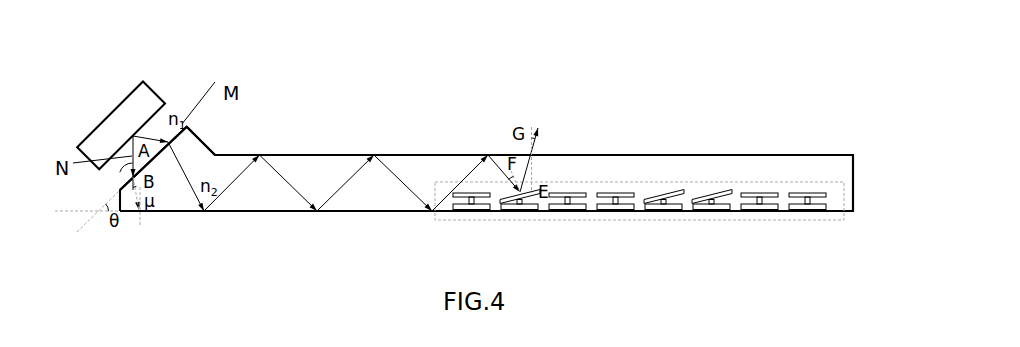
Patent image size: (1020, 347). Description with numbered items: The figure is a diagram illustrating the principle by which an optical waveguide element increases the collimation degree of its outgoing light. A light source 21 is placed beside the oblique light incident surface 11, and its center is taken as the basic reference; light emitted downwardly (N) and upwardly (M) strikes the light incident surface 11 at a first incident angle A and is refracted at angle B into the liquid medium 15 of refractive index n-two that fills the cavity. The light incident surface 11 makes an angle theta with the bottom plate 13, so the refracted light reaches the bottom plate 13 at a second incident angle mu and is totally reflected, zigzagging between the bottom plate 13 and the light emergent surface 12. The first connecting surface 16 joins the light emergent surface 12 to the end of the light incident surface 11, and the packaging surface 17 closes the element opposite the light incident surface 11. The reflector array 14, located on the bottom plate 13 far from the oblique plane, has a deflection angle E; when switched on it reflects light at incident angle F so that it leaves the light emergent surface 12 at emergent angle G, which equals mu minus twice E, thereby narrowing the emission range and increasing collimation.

The light incident surface 11 is at (128, 184).
The light emergent surface 12 is at (363, 152).
The bottom plate 13 is at (337, 211).
The reflector array 14 is at (606, 182).
The liquid medium 15 is at (255, 177).
The first connecting surface 16 is at (207, 144).
The packaging surface 17 is at (853, 181).
The light source 21 is at (154, 92).